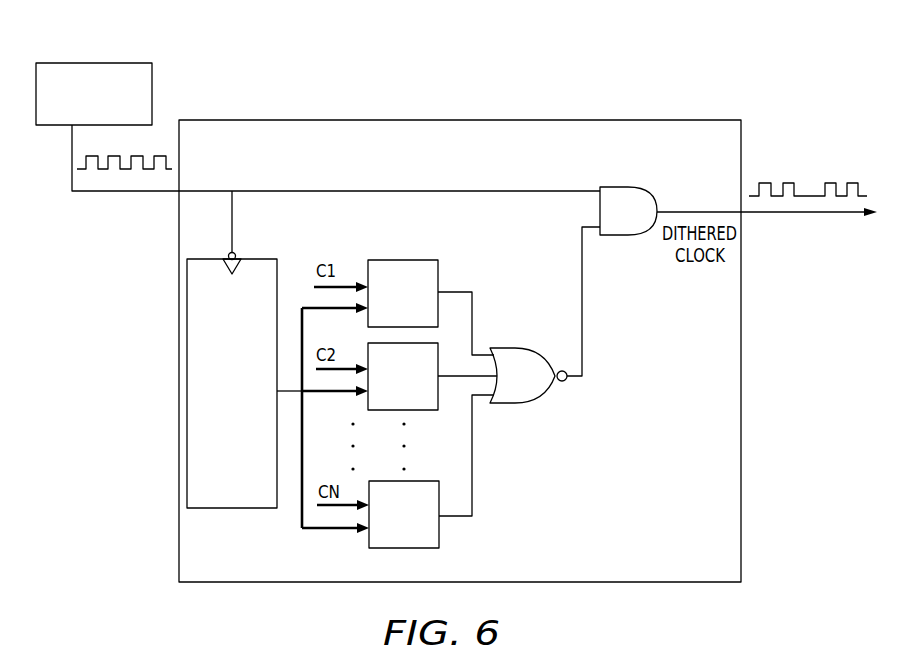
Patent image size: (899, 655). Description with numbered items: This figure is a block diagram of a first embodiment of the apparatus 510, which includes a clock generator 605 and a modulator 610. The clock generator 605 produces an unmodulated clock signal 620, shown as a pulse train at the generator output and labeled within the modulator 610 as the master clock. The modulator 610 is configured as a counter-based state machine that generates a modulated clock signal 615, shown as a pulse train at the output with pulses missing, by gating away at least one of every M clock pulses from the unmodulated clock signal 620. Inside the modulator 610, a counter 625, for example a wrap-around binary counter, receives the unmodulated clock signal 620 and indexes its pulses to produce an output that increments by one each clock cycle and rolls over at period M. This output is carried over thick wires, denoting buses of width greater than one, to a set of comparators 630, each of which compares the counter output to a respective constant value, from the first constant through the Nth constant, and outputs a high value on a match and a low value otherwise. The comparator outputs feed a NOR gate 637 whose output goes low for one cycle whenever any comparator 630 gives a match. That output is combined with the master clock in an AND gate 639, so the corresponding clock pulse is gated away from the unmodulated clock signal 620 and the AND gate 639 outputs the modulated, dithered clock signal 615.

The clock generator 605 is at (122, 63).
The unmodulated clock signal 620 is at (113, 156).
The modulator 610 is at (445, 120).
The apparatus 510 is at (706, 108).
The modulated clock signal 615 is at (787, 183).
The AND gate 639 is at (628, 236).
The NOR gate 637 is at (528, 401).
The comparator 630 is at (403, 404).
The counter 625 is at (232, 381).